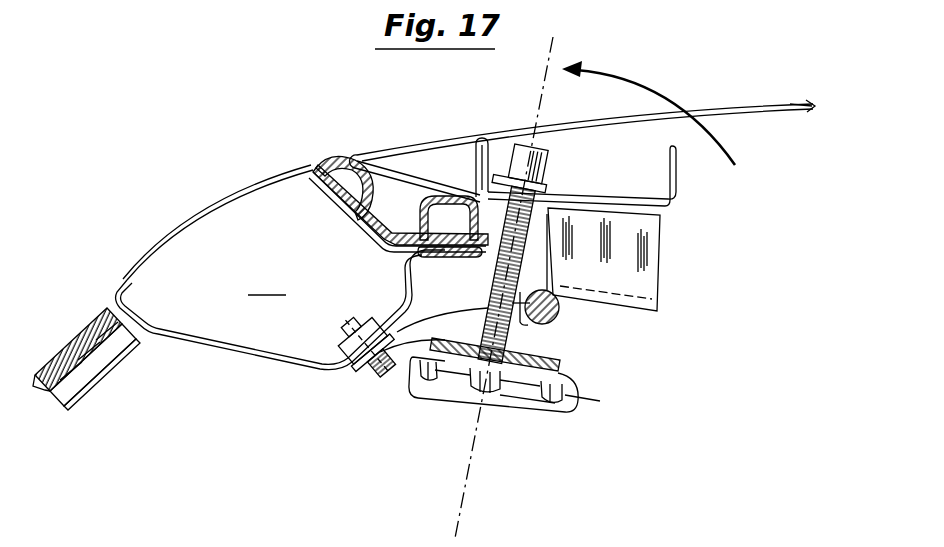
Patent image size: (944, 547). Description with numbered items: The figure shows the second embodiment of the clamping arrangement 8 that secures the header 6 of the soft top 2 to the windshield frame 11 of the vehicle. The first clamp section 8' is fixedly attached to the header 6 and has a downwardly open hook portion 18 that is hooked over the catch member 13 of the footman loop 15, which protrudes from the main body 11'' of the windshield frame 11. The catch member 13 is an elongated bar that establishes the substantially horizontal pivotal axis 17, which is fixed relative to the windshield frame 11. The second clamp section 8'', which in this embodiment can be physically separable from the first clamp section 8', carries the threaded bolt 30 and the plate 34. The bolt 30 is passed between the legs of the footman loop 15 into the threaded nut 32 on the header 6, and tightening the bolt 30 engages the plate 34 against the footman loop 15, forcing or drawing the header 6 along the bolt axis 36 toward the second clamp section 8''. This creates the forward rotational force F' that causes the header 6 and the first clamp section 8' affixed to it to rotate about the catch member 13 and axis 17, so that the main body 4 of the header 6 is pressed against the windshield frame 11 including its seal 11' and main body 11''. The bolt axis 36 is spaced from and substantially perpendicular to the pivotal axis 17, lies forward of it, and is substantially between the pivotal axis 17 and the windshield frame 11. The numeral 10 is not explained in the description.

The soft top 2 is at (776, 104).
The main body of the header 4 is at (470, 166).
The header 6 is at (630, 187).
The clamping arrangement 8 is at (668, 313).
The first clamp section 8' is at (634, 259).
The second clamp section 8'' is at (499, 395).
The strip tip 10 is at (733, 108).
The windshield frame 11 is at (304, 214).
The seal 11' is at (376, 176).
The main body of the windshield frame 11'' is at (239, 330).
The catch member 13 is at (560, 306).
The footman loop 15 is at (432, 322).
The pivotal axis 17 is at (553, 320).
The hook portion 18 is at (544, 268).
The threaded bolt 30 is at (493, 287).
The threaded nut 32 is at (551, 165).
The plate 34 is at (561, 372).
The bolt axis 36 is at (540, 110).
The forward rotational force F' is at (648, 98).